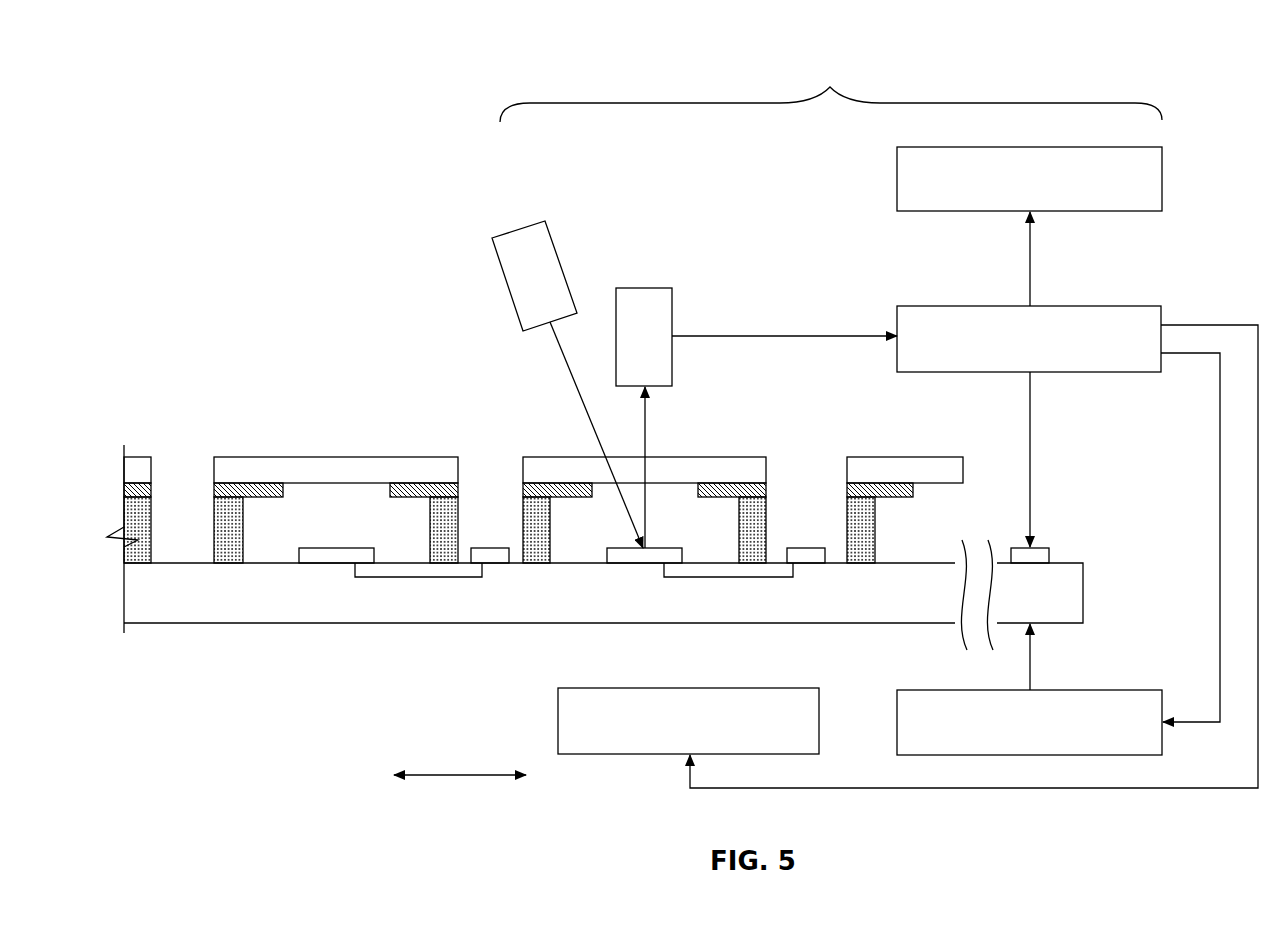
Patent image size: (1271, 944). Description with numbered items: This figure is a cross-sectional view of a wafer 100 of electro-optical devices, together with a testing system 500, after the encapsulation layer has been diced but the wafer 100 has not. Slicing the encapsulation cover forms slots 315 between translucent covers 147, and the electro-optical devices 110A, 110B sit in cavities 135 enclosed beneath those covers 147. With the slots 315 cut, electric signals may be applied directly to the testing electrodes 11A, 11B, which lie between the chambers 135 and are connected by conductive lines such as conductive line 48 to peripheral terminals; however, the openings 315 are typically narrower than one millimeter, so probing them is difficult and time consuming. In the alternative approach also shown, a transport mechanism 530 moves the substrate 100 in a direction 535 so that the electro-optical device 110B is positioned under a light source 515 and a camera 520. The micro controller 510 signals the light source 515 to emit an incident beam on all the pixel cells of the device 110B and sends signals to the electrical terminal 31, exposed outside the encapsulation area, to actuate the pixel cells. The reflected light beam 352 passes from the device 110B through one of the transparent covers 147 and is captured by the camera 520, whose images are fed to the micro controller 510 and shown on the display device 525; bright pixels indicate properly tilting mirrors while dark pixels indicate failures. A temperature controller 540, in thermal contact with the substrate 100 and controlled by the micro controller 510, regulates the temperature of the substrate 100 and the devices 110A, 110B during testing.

The testing system 500 is at (831, 93).
The display device 525 is at (963, 147).
The micro controller 510 is at (961, 306).
The camera 520 is at (645, 288).
The light source 515 is at (519, 228).
The reflected light beam 352 is at (648, 433).
The transport mechanism 530 is at (960, 690).
The temperature controller 540 is at (620, 688).
The direction 535 is at (459, 777).
The electrical terminal 31 is at (1040, 548).
The wafer 100 is at (233, 594).
The slots 315 is at (536, 482).
The translucent covers 147 is at (246, 456).
The cavities 135 is at (356, 539).
The conductive line 48 is at (336, 500).
The electro-optical device 110A is at (337, 557).
The electro-optical device 110B is at (645, 557).
The testing electrode 11A is at (484, 553).
The testing electrode 11B is at (803, 553).